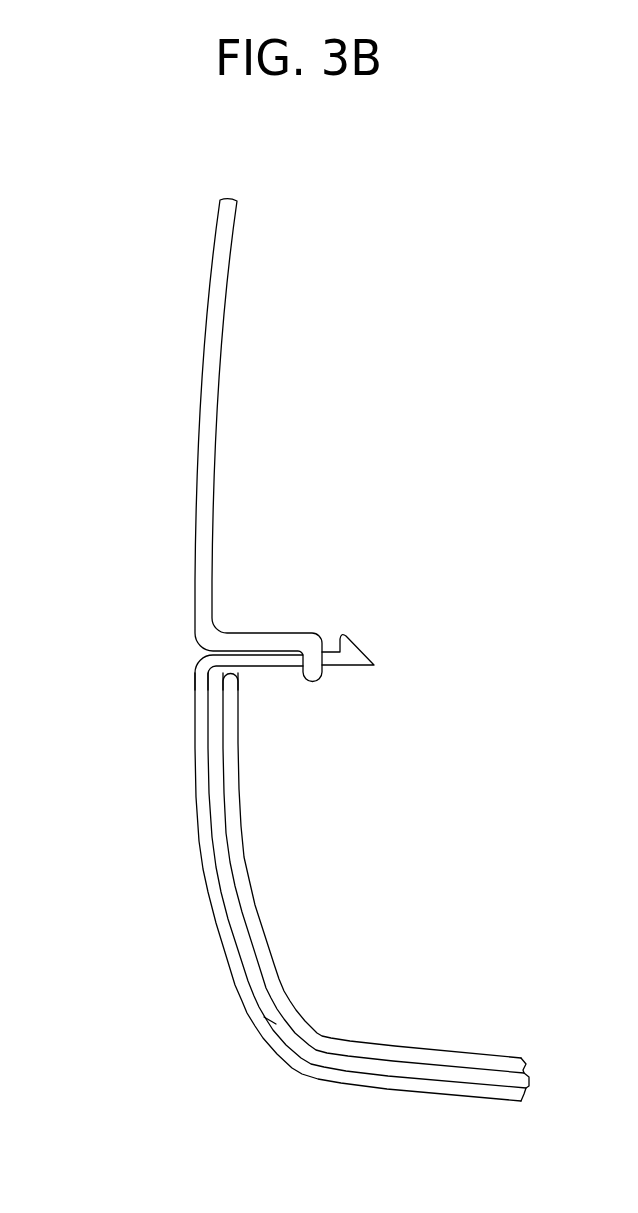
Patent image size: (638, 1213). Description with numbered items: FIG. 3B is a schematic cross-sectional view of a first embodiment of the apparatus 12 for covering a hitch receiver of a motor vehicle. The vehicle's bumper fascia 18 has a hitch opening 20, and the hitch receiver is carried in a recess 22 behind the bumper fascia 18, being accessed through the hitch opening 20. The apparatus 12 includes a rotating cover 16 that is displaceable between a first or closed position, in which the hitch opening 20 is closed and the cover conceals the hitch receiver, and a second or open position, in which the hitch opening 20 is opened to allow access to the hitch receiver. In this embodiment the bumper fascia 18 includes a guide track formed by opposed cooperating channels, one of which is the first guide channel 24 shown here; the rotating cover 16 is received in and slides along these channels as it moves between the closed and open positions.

The apparatus 12 is at (216, 1049).
The rotating cover 16 is at (353, 1065).
The bumper fascia 18 is at (197, 438).
The hitch opening 20 is at (222, 854).
The recess 22 is at (344, 873).
The first guide channel 24 is at (212, 725).